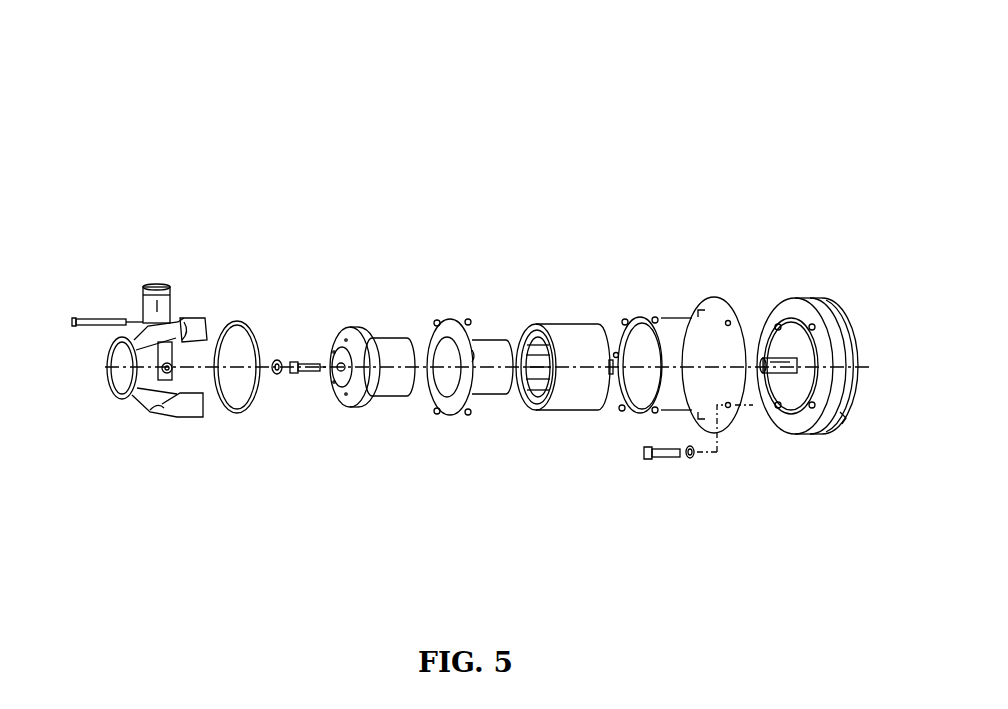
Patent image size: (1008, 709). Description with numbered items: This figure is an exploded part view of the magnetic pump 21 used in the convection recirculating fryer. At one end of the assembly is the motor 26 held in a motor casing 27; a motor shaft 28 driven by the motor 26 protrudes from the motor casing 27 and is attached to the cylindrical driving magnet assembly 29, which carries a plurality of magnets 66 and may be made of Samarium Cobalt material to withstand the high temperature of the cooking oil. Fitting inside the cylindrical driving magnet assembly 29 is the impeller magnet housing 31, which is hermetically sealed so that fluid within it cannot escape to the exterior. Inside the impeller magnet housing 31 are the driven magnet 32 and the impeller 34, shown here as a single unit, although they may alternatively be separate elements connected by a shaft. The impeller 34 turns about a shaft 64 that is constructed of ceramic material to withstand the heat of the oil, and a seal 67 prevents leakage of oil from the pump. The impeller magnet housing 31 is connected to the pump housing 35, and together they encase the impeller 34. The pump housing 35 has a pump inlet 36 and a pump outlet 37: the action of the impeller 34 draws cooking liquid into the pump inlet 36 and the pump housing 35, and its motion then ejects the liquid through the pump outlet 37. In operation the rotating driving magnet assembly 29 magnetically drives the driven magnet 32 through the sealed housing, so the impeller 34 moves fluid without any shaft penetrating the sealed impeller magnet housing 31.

The magnetic pump 21 is at (538, 178).
The motor 26 is at (813, 297).
The motor casing 27 is at (843, 418).
The motor shaft 28 is at (762, 360).
The driving magnet assembly 29 is at (566, 320).
The impeller magnet housing 31 is at (457, 318).
The driven magnet 32 is at (395, 397).
The impeller 34 is at (351, 318).
The pump housing 35 is at (193, 315).
The pump inlet 36 is at (112, 388).
The pump outlet 37 is at (147, 290).
The shaft 64 is at (305, 382).
The magnets 66 is at (537, 405).
The seal 67 is at (230, 418).